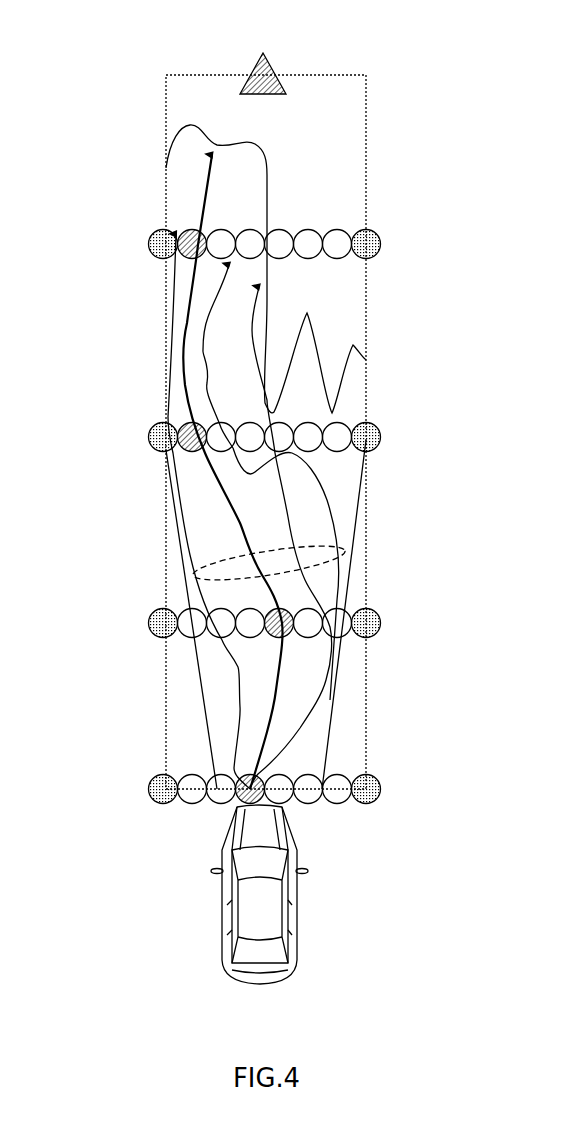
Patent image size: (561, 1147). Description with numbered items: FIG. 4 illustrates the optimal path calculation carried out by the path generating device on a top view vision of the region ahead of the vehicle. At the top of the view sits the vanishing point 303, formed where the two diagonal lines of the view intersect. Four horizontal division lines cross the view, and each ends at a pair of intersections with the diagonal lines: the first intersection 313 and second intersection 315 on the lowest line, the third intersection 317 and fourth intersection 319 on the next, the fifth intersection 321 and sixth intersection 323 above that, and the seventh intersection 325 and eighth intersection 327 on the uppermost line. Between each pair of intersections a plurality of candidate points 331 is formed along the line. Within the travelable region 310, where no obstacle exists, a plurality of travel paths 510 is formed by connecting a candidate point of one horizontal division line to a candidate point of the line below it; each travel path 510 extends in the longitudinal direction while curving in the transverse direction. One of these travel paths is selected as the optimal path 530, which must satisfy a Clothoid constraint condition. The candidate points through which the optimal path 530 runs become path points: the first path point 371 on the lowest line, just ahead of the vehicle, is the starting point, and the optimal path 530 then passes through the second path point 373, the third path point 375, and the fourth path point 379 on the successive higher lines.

The vanishing point 303 is at (263, 52).
The travelable region 310 is at (181, 172).
The first intersection 313 is at (151, 794).
The second intersection 315 is at (381, 789).
The third intersection 317 is at (148, 625).
The fourth intersection 319 is at (381, 623).
The fifth intersection 321 is at (150, 441).
The sixth intersection 323 is at (381, 437).
The seventh intersection 325 is at (150, 246).
The eighth intersection 327 is at (381, 244).
The candidate points 331 is at (338, 804).
The first path point 371 is at (238, 798).
The second path point 373 is at (290, 611).
The third path point 375 is at (189, 423).
The fourth path point 379 is at (188, 231).
The travel paths 510 is at (223, 563).
The optimal path 530 is at (225, 503).